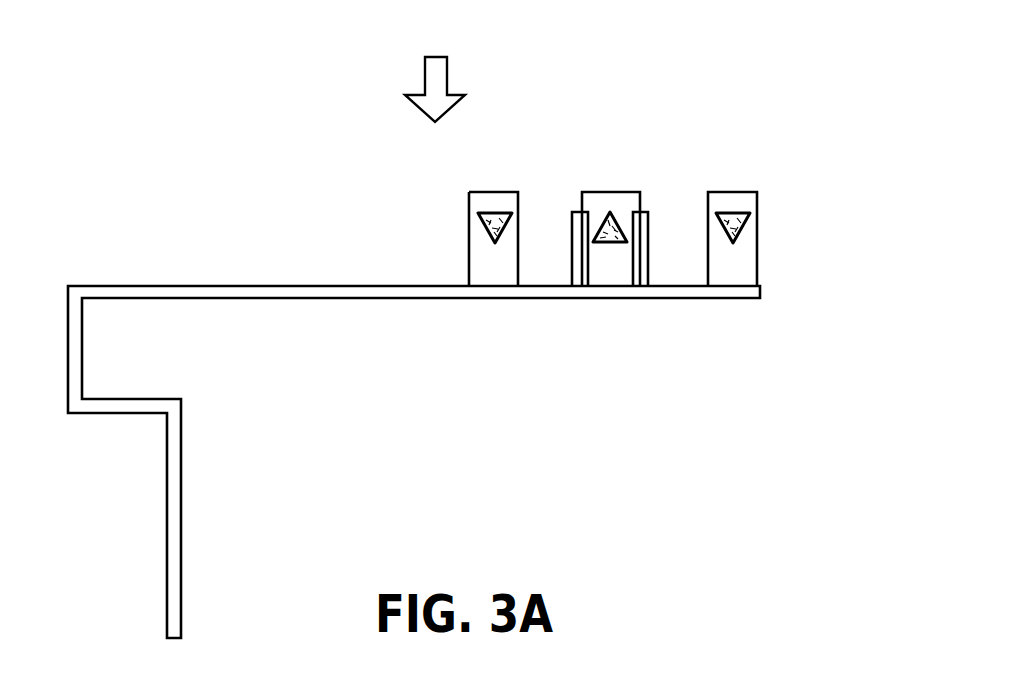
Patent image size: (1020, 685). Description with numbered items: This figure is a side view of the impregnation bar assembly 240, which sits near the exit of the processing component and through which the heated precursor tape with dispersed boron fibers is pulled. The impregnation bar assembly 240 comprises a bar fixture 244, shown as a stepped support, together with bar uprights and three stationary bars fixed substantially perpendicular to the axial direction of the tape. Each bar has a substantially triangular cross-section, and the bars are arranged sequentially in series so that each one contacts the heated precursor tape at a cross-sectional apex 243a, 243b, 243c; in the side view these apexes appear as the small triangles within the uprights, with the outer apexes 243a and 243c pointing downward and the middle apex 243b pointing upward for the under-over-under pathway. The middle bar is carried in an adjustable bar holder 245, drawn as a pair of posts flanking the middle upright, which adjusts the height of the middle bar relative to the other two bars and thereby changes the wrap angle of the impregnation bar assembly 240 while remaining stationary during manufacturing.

The impregnation bar assembly 240 is at (435, 69).
The cross-sectional apex 243a is at (748, 212).
The cross-sectional apex 243b is at (612, 212).
The cross-sectional apex 243c is at (487, 213).
The bar fixture 244 is at (248, 299).
The adjustable bar holder 245 is at (597, 192).